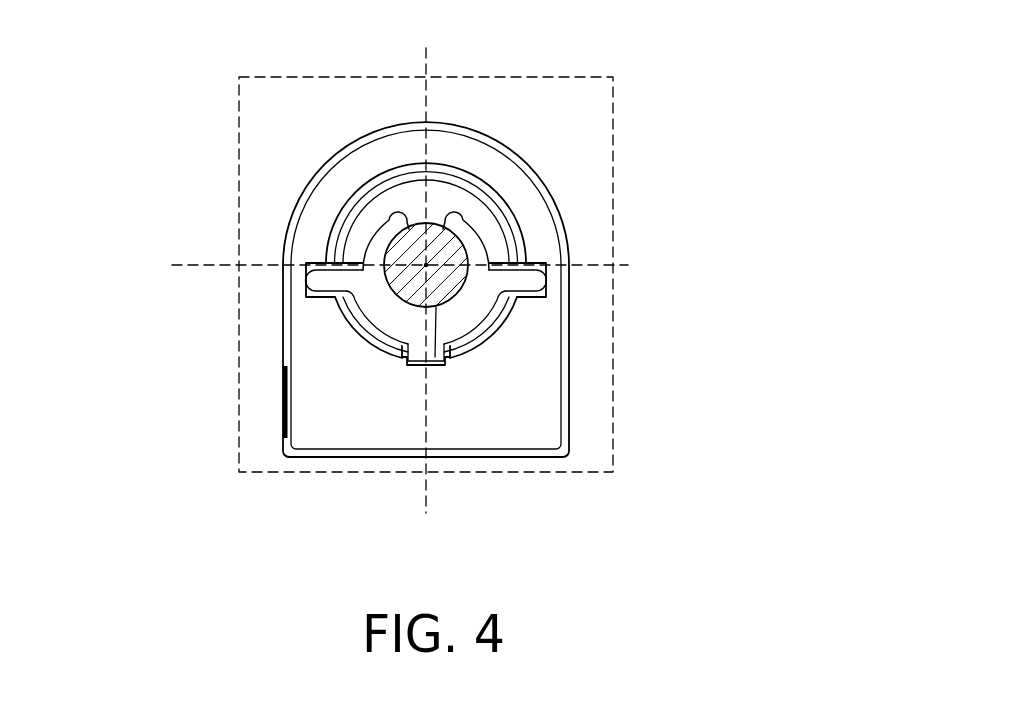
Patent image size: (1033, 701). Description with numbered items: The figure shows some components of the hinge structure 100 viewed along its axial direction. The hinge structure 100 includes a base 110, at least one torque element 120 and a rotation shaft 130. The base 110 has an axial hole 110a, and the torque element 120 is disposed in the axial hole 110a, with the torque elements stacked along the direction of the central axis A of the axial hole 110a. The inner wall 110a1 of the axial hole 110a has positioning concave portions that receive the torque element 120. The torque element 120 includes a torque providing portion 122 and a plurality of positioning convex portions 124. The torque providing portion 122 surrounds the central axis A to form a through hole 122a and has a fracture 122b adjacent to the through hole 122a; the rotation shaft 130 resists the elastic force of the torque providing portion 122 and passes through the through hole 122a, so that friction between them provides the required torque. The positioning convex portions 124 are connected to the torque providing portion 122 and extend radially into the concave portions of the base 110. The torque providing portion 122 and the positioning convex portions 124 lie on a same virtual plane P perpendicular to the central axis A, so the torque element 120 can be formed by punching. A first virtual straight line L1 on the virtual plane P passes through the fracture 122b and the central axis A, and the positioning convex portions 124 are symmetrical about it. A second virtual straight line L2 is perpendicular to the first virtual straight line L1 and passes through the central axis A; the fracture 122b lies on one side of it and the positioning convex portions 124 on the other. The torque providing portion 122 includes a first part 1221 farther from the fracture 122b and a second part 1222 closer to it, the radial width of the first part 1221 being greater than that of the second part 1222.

The hinge structure 100 is at (763, 577).
The base 110 is at (548, 426).
The axial hole 110a is at (463, 207).
The inner wall 110a1 is at (393, 202).
The torque element 120 is at (445, 289).
The torque providing portion 122 is at (425, 289).
The through hole 122a is at (452, 300).
The fracture 122b is at (435, 212).
The first part 1221 is at (397, 317).
The second part 1222 is at (378, 242).
The positioning convex portion 124 is at (305, 277).
The rotation shaft 130 is at (438, 363).
The central axis A is at (458, 237).
The virtual plane P is at (567, 75).
The first virtual straight line L1 is at (430, 97).
The second virtual straight line L2 is at (205, 265).